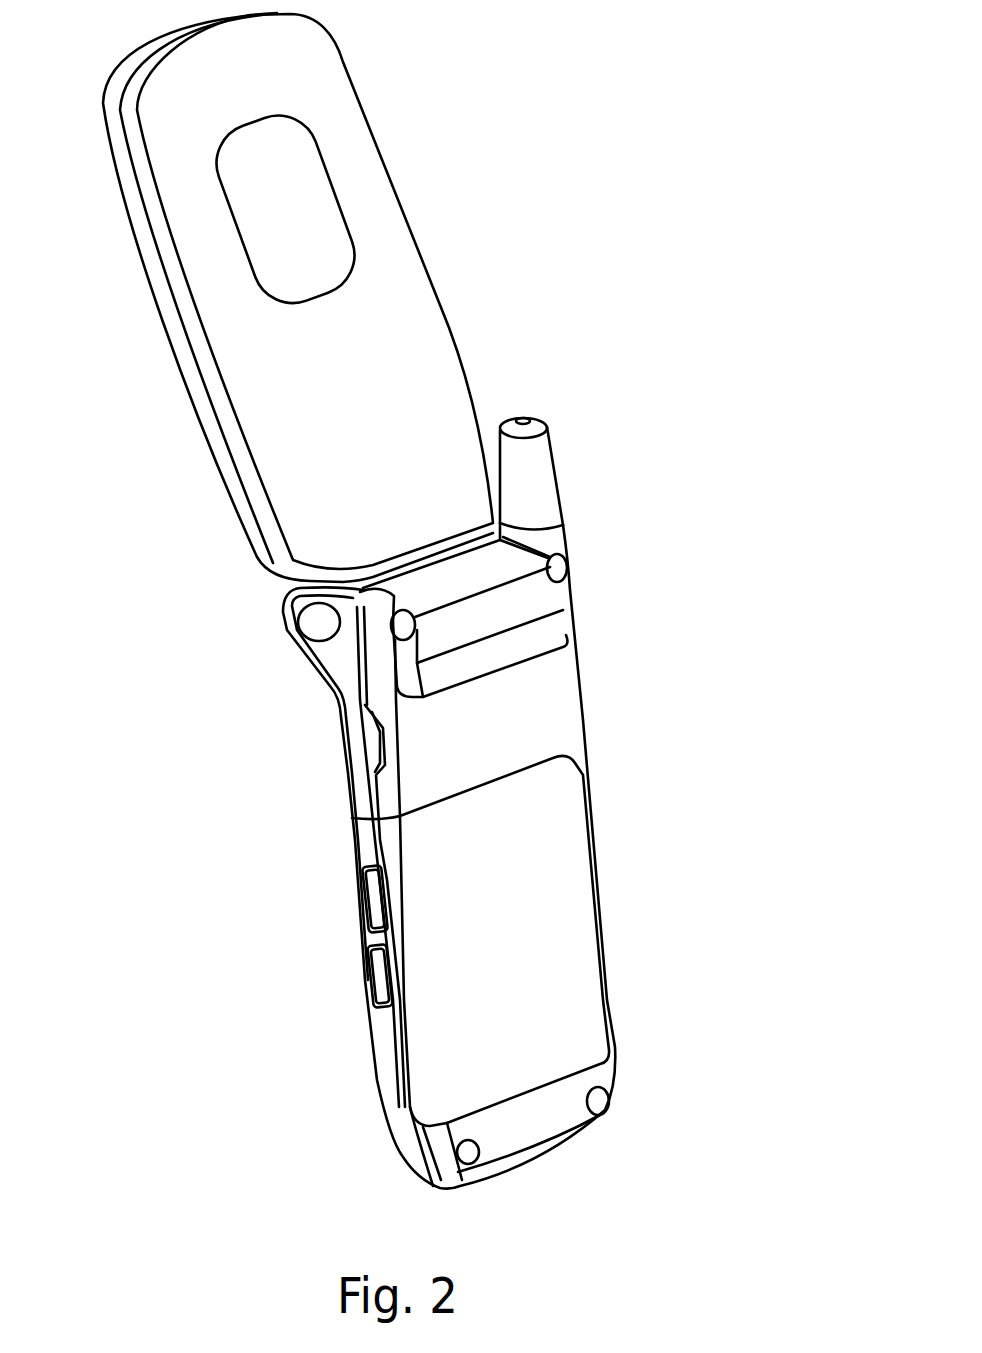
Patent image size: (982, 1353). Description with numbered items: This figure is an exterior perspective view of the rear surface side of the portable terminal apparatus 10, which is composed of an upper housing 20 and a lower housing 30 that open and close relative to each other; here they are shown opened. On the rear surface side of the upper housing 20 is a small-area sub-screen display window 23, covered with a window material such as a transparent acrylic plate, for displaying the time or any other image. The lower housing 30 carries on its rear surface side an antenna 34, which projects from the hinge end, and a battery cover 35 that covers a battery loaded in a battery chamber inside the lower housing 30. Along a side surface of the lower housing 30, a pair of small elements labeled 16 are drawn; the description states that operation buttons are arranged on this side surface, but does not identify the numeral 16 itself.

The portable terminal apparatus 10 is at (723, 286).
The upper housing 20 is at (448, 224).
The sub-screen display window 23 is at (297, 168).
The lower housing 30 is at (648, 786).
The antenna 34 is at (540, 468).
The battery cover 35 is at (573, 925).
The side buttons 16 is at (328, 941).